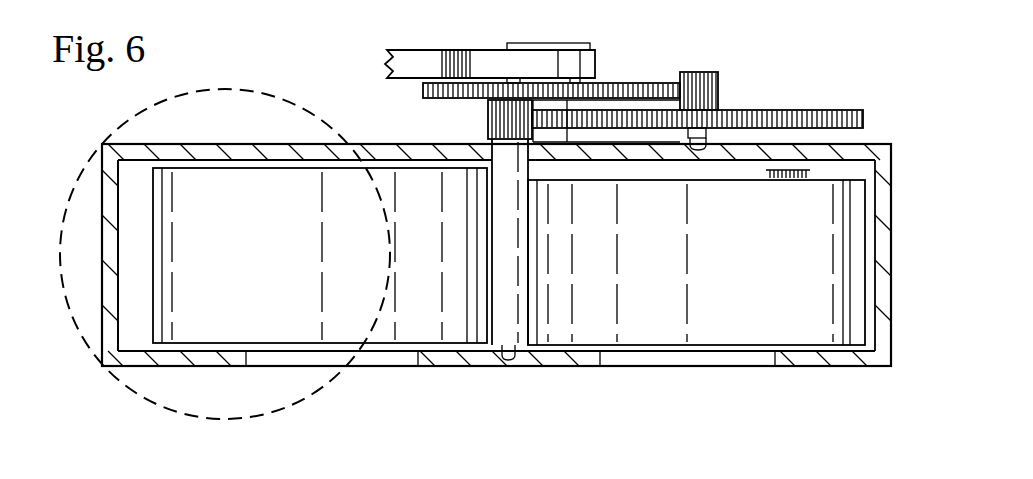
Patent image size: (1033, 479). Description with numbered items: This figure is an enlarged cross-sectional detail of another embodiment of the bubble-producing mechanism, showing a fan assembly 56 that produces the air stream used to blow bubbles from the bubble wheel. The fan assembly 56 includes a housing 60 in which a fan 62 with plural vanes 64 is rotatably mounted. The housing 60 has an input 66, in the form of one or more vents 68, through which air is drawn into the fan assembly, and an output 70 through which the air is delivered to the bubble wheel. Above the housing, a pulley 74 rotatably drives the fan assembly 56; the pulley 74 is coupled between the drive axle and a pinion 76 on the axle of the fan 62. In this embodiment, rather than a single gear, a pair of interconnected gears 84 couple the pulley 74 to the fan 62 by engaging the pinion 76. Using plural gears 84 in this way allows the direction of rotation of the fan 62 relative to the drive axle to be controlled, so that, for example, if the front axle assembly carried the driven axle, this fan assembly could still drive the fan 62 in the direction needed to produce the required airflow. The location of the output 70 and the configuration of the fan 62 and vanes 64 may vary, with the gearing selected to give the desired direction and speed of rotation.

The fan assembly 56 is at (803, 87).
The housing 60 is at (893, 357).
The fan 62 is at (100, 285).
The vanes 64 is at (258, 270).
The input 66 is at (617, 376).
The vents 68 is at (413, 360).
The output 70 is at (238, 89).
The pulley 74 is at (428, 50).
The pinion 76 is at (487, 129).
The interconnected gears 84 is at (625, 83).